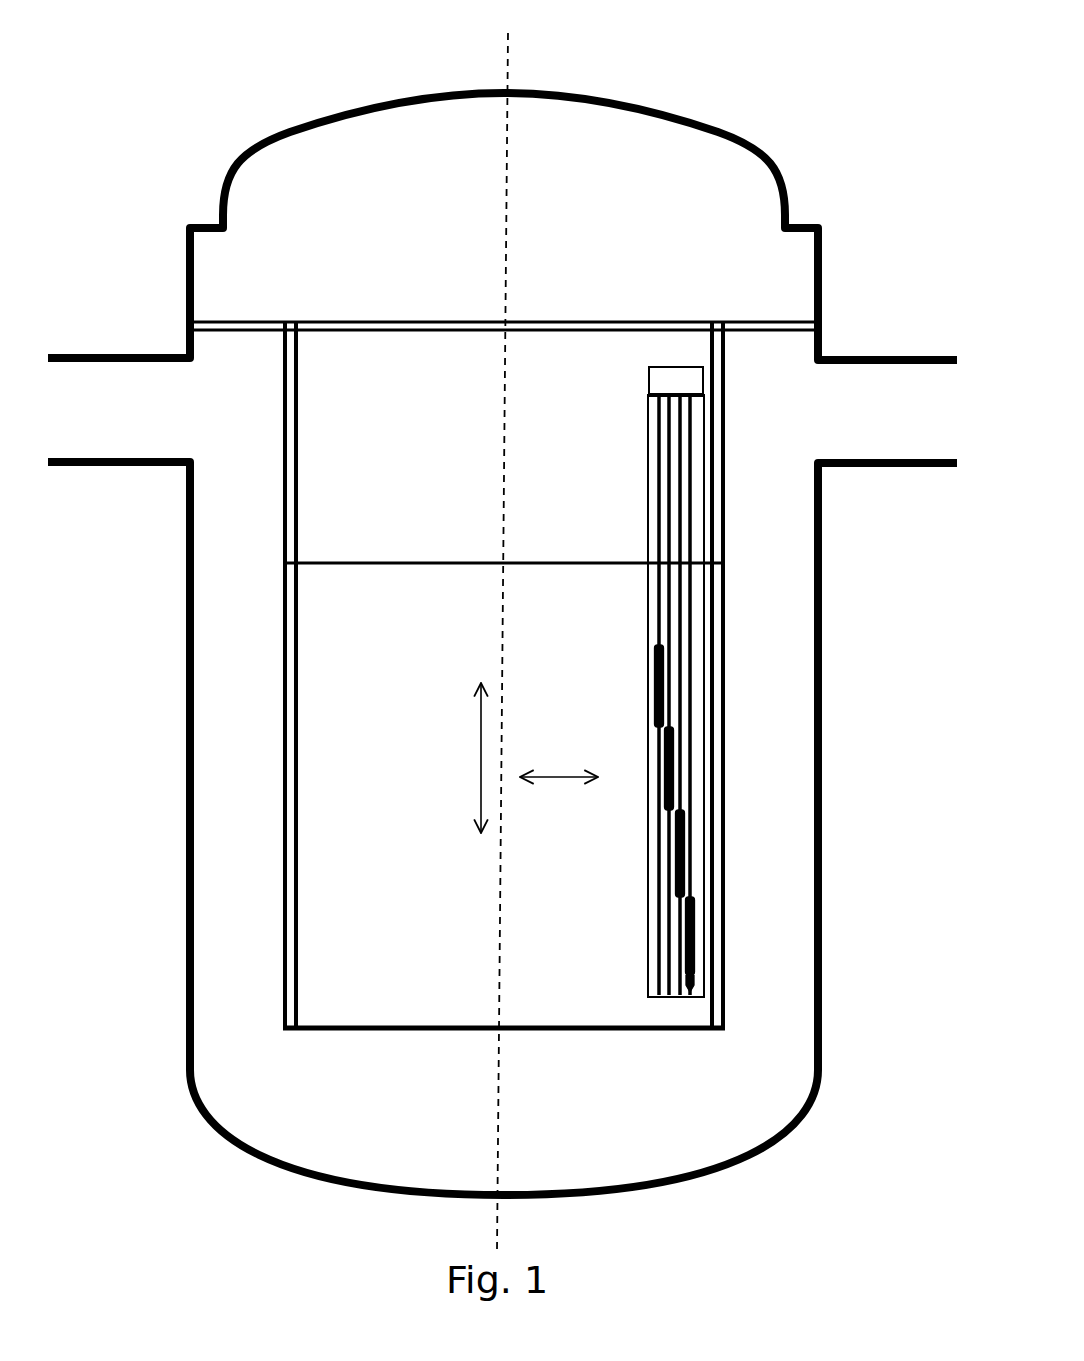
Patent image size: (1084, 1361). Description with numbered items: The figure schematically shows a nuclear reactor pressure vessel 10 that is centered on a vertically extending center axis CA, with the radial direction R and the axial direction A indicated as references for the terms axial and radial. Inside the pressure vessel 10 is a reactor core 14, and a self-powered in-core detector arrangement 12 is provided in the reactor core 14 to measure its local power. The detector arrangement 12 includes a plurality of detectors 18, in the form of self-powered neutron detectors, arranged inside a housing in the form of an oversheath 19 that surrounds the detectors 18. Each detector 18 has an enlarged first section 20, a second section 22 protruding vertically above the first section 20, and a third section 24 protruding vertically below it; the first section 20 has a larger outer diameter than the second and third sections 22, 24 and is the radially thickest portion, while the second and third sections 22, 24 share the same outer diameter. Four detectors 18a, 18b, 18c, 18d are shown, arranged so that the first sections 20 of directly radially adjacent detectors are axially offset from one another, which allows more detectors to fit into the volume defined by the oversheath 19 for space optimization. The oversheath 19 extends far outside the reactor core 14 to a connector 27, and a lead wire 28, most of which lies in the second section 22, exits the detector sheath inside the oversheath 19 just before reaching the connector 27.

The nuclear reactor pressure vessel 10 is at (714, 92).
The self-powered in-core detector arrangement 12 is at (602, 710).
The reactor core 14 is at (570, 1035).
The detectors 18 is at (662, 865).
The detector 18a is at (622, 853).
The detector 18b is at (634, 909).
The detector 18c is at (682, 1000).
The detector 18d is at (695, 1000).
The oversheath 19 is at (648, 958).
The first section 20 is at (655, 660).
The second section 22 is at (652, 600).
The third section 24 is at (658, 806).
The connector 27 is at (649, 380).
The lead wire 28 is at (650, 395).
The center axis CA is at (508, 72).
The axial direction A is at (481, 745).
The radial direction R is at (560, 779).